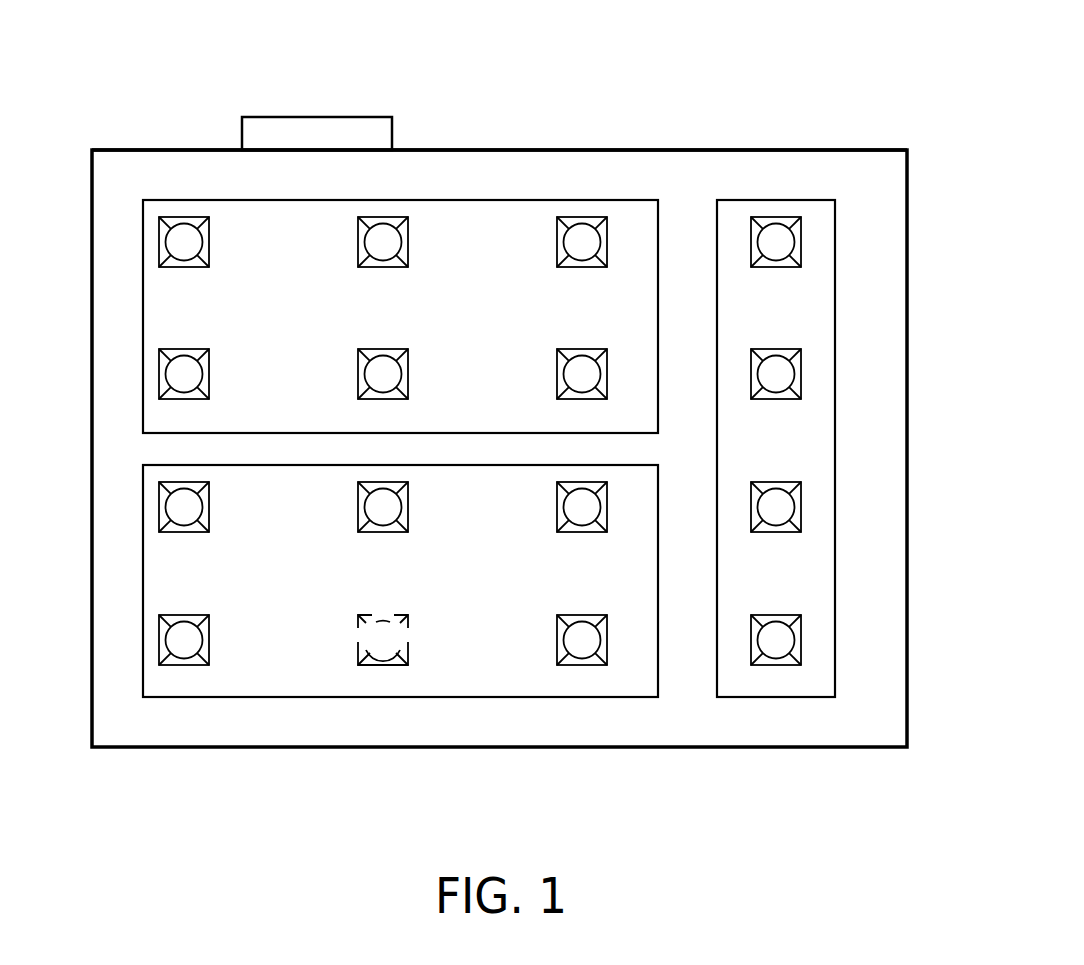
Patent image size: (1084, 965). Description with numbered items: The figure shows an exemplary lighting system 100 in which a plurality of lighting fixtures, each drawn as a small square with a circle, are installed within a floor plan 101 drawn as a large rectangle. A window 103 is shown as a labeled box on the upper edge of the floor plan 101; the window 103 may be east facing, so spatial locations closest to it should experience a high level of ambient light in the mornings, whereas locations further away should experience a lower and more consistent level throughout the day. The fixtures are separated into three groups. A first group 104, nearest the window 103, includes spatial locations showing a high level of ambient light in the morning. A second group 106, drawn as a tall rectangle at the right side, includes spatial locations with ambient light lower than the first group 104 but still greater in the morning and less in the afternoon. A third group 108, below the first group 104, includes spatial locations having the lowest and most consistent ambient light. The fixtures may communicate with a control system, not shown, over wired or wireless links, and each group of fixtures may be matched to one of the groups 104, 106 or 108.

The lighting system 100 is at (806, 86).
The floor plan 101 is at (700, 150).
The window 103 is at (323, 117).
The first group 104 is at (543, 199).
The second group 106 is at (780, 687).
The third group 108 is at (371, 687).